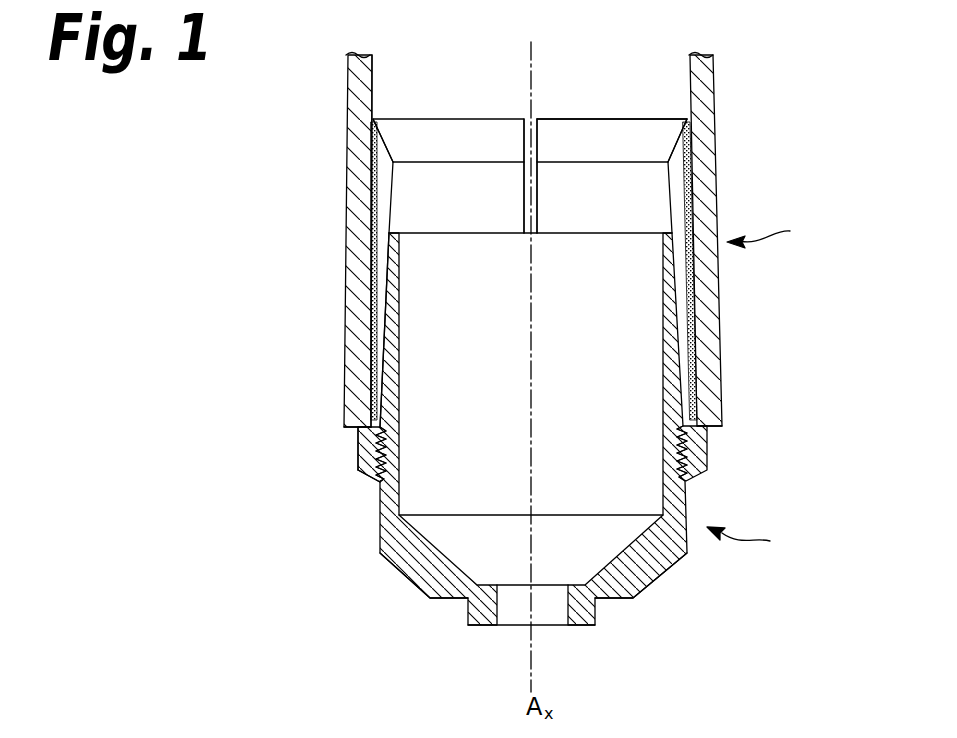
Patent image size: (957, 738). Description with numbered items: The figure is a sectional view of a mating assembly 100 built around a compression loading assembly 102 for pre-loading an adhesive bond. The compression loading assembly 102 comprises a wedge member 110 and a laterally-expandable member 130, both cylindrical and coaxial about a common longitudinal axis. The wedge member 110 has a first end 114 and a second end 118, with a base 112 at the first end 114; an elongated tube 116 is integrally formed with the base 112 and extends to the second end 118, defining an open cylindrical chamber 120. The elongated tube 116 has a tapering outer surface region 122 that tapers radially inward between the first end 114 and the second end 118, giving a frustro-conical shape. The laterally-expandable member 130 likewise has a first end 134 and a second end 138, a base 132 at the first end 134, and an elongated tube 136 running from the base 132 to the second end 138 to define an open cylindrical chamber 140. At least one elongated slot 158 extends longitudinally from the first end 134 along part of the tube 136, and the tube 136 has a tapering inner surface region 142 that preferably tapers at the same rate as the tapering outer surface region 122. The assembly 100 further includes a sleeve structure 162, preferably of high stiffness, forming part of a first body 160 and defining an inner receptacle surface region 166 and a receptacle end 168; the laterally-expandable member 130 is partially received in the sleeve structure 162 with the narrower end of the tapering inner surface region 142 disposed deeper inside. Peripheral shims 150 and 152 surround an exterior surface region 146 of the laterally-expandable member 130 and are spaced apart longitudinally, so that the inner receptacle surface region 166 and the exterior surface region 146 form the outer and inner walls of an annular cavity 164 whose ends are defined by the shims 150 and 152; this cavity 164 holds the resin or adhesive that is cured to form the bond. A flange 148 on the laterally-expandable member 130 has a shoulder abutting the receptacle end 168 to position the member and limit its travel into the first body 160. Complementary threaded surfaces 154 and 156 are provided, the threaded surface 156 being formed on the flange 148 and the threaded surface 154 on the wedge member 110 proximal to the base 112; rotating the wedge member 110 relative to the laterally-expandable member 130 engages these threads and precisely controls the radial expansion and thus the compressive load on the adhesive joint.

The assembly 100 is at (780, 232).
The compression loading assembly 102 is at (758, 540).
The wedge member 110 is at (382, 514).
The base 112 is at (412, 573).
The first end 114 is at (480, 628).
The elongated tube 116 is at (400, 468).
The second end 118 is at (394, 232).
The open cylindrical chamber 120 is at (622, 415).
The tapering outer surface region 122 is at (383, 288).
The laterally-expandable member 130 is at (465, 126).
The base 132 is at (615, 127).
The first end 134 is at (562, 117).
The elongated tube 136 is at (673, 181).
The second end 138 is at (377, 482).
The open cylindrical chamber 140 is at (597, 214).
The tapering inner surface region 142 is at (718, 402).
The exterior surface region 146 is at (385, 178).
The flange 148 is at (367, 456).
The peripheral shim 150 is at (372, 421).
The peripheral shim 152 is at (374, 118).
The wedge-member threaded surface 154 is at (364, 441).
The laterally-expandable-member threaded surface 156 is at (369, 476).
The elongated slot 158 is at (525, 134).
The first body 160 is at (706, 88).
The sleeve structure 162 is at (356, 84).
The annular cavity 164 is at (370, 257).
The inner receptacle surface region 166 is at (376, 219).
The receptacle end 168 is at (720, 428).